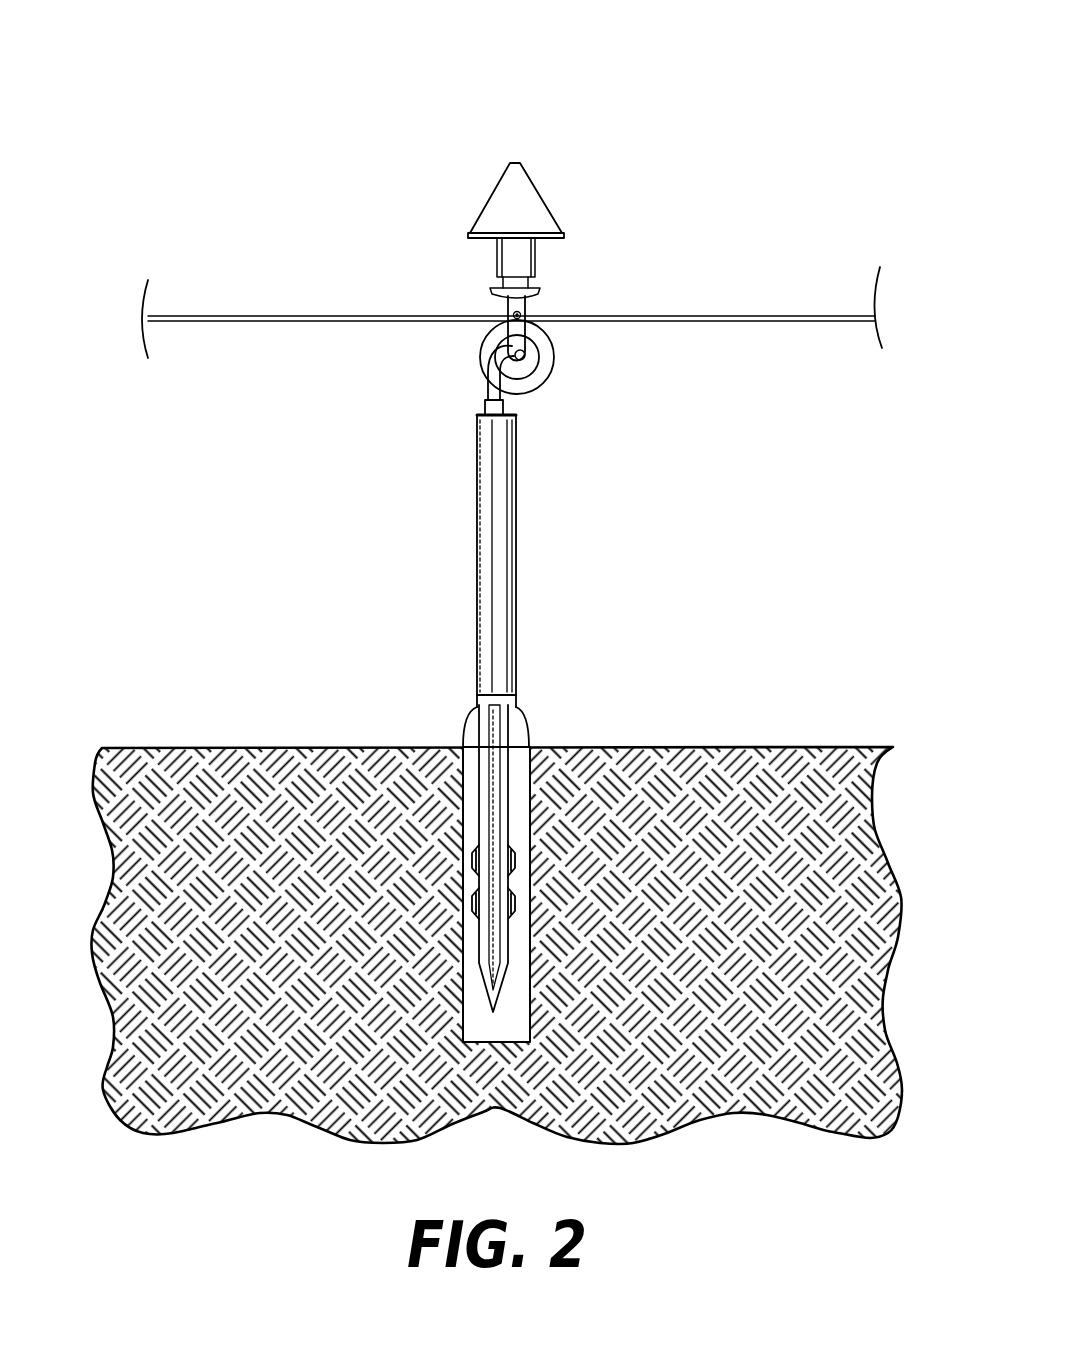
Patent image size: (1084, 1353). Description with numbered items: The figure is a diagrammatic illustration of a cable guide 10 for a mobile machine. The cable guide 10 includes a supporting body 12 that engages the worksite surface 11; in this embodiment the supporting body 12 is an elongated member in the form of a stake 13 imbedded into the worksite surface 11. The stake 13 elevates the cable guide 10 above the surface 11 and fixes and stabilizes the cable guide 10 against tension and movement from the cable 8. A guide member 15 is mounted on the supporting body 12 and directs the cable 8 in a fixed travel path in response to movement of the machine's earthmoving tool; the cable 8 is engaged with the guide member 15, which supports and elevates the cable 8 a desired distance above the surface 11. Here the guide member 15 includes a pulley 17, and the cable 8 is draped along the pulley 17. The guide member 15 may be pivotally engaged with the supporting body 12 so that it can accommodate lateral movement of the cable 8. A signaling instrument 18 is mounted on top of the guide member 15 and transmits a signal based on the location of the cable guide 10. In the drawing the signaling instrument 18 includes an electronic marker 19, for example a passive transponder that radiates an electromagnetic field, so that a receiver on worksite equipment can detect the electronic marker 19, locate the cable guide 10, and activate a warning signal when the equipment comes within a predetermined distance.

The cable 8 is at (287, 317).
The cable guide 10 is at (512, 509).
The worksite surface 11 is at (273, 747).
The supporting body 12 is at (587, 689).
The stake 13 is at (497, 803).
The guide member 15 is at (438, 388).
The pulley 17 is at (554, 355).
The signaling instrument 18 is at (517, 206).
The electronic marker 19 is at (520, 202).